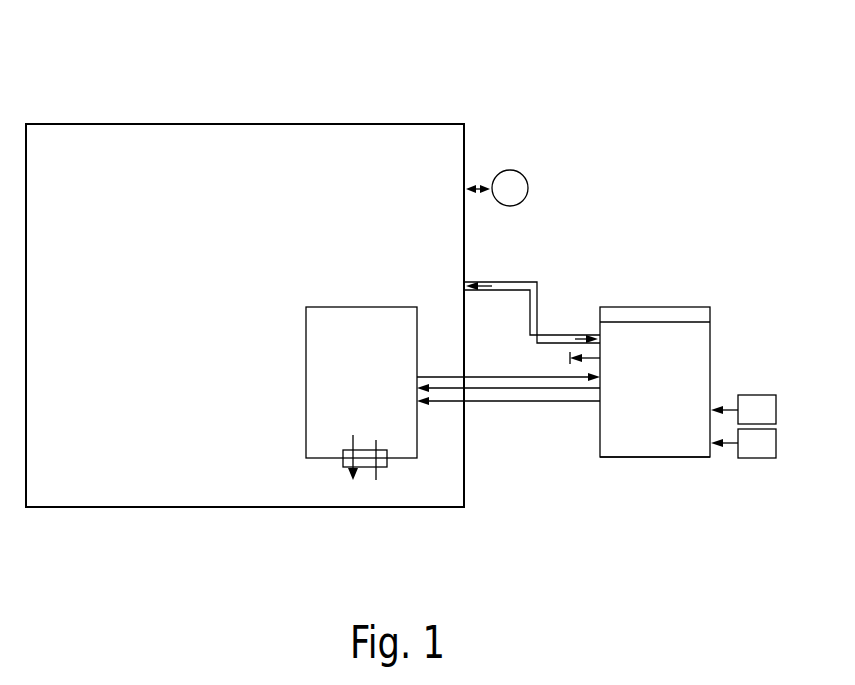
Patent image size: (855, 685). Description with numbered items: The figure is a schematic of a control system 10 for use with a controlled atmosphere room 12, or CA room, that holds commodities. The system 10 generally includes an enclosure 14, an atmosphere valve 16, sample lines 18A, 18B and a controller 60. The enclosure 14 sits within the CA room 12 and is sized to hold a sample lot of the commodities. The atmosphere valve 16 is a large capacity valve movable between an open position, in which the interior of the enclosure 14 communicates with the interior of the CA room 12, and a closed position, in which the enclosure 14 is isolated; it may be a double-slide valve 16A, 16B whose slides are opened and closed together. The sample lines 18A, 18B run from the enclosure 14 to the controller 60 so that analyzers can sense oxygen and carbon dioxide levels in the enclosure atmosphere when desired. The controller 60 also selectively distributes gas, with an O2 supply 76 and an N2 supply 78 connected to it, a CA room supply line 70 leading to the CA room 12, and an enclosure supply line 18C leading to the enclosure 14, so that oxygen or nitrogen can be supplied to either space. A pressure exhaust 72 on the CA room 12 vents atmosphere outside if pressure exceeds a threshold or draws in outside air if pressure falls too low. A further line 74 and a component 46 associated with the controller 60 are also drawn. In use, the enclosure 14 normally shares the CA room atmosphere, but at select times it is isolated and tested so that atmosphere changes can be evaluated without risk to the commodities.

The control system 10 is at (668, 178).
The controlled atmosphere room 12 is at (385, 116).
The enclosure 14 is at (359, 300).
The atmosphere valve 16 is at (387, 463).
The double-slide valve slide 16A is at (378, 444).
The double-slide valve slide 16B is at (352, 443).
The sample line 18A is at (485, 376).
The sample line 18B is at (503, 390).
The enclosure supply line 18C is at (535, 403).
The gas supply unit 46 is at (657, 458).
The controller 60 is at (653, 300).
The CA room supply line 70 is at (545, 339).
The pressure exhaust 72 is at (517, 204).
The return line 74 is at (515, 282).
The O2 supply 76 is at (777, 409).
The N2 supply 78 is at (777, 443).